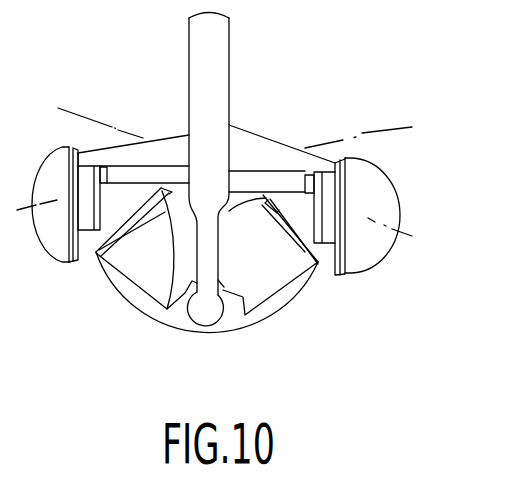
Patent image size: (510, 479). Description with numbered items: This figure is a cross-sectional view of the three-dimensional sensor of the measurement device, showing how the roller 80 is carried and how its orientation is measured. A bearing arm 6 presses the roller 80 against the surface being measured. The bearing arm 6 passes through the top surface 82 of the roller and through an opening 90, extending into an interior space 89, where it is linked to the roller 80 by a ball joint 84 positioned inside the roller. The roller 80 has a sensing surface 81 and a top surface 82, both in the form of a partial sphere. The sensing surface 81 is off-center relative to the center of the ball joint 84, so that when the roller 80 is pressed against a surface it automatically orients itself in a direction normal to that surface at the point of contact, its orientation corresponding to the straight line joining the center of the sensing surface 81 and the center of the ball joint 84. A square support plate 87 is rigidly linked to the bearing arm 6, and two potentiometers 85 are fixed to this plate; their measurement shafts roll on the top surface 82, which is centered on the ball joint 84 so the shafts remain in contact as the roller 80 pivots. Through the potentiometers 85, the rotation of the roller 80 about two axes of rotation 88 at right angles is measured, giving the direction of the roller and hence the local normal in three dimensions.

The bearing arm 6 is at (213, 48).
The roller 80 is at (139, 310).
The sensing surface 81 is at (290, 307).
The top surface 82 is at (318, 245).
The ball joint 84 is at (205, 308).
The potentiometers 85 is at (53, 165).
The square support plate 87 is at (252, 153).
The axes of rotation 88 is at (113, 127).
The space 89 is at (257, 277).
The opening 90 is at (113, 262).